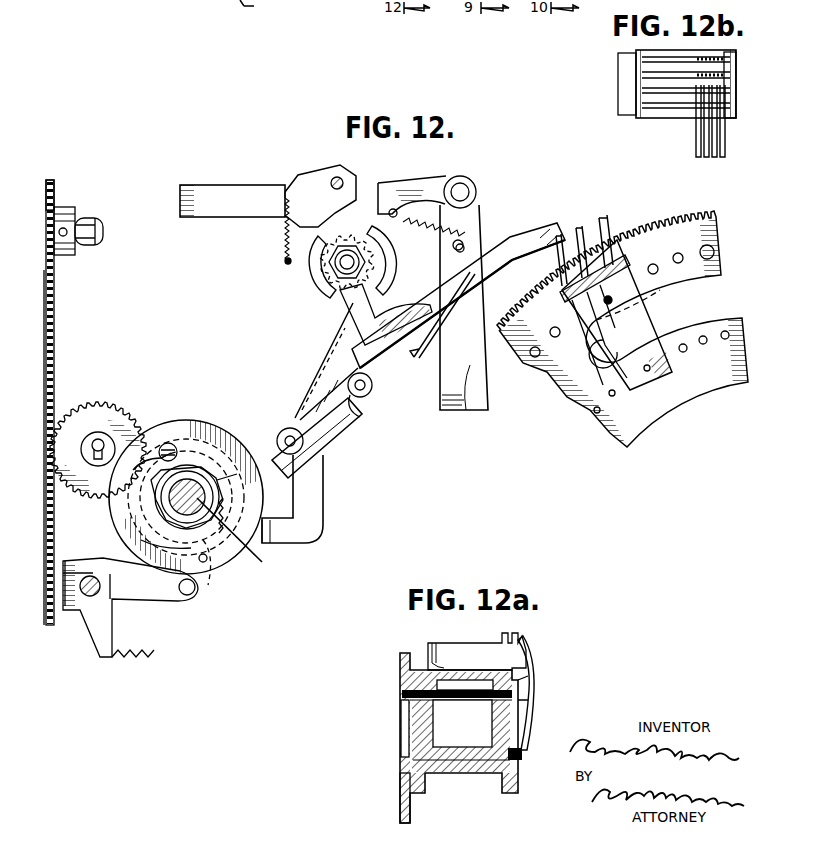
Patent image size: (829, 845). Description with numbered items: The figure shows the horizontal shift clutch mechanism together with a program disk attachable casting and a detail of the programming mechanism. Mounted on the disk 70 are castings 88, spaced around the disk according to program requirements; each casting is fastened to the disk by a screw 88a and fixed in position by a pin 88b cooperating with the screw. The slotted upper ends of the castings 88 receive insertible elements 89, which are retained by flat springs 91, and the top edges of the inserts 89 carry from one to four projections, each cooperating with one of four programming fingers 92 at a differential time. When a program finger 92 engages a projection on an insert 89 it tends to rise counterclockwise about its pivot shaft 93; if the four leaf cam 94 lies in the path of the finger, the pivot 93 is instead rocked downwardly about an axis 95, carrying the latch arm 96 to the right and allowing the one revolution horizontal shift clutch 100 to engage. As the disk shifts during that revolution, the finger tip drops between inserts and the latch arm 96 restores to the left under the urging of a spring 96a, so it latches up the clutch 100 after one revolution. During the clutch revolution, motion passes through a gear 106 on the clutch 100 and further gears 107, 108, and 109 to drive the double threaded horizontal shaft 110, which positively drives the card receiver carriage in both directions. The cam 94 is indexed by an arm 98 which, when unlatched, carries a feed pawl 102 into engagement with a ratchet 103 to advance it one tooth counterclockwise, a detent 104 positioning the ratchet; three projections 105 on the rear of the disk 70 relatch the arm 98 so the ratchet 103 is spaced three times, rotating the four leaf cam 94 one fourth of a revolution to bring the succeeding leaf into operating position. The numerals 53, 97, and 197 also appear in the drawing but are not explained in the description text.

In FIG. 12, the pin 53 is at (242, 537).
In FIG. 12, the disk 70 is at (660, 232).
In FIG. 12, the castings 88 is at (617, 315).
In FIG. 12B, the castings 88 is at (668, 118).
In FIG. 12A, the castings 88 is at (518, 719).
In FIG. 12A, the screw 88a is at (480, 700).
In FIG. 12A, the pin 88b is at (405, 782).
In FIG. 12, the insertible elements 89 is at (591, 234).
In FIG. 12B, the insertible elements 89 is at (660, 104).
In FIG. 12A, the insertible elements 89 is at (450, 652).
In FIG. 12B, the flat springs 91 is at (736, 106).
In FIG. 12A, the flat springs 91 is at (528, 686).
In FIG. 12, the programming fingers 92 is at (522, 246).
In FIG. 12B, the programming fingers 92 is at (727, 136).
In FIG. 12, the pivot shaft 93 is at (326, 462).
In FIG. 12, the four leaf cam 94 is at (346, 308).
In FIG. 12, the axis 95 is at (371, 394).
In FIG. 12, the latch arm 96 is at (313, 505).
In FIG. 12, the spring 96a is at (325, 368).
In FIG. 12, the rod 97 is at (428, 344).
In FIG. 12, the arm 98 is at (470, 395).
In FIG. 12, the horizontal shift clutch 100 is at (205, 410).
In FIG. 12, the feed pawl 102 is at (385, 202).
In FIG. 12, the ratchet 103 is at (312, 277).
In FIG. 12, the detent 104 is at (306, 186).
In FIG. 12, the projection 105 is at (168, 452).
In FIG. 12, the gear 106 is at (208, 582).
In FIG. 12, the gear 107 is at (104, 408).
In FIG. 12, the gear 108 is at (53, 337).
In FIG. 12, the gear 109 is at (56, 192).
In FIG. 12, the horizontal shaft 110 is at (88, 230).
In FIG. 12, the bracket 197 is at (88, 604).